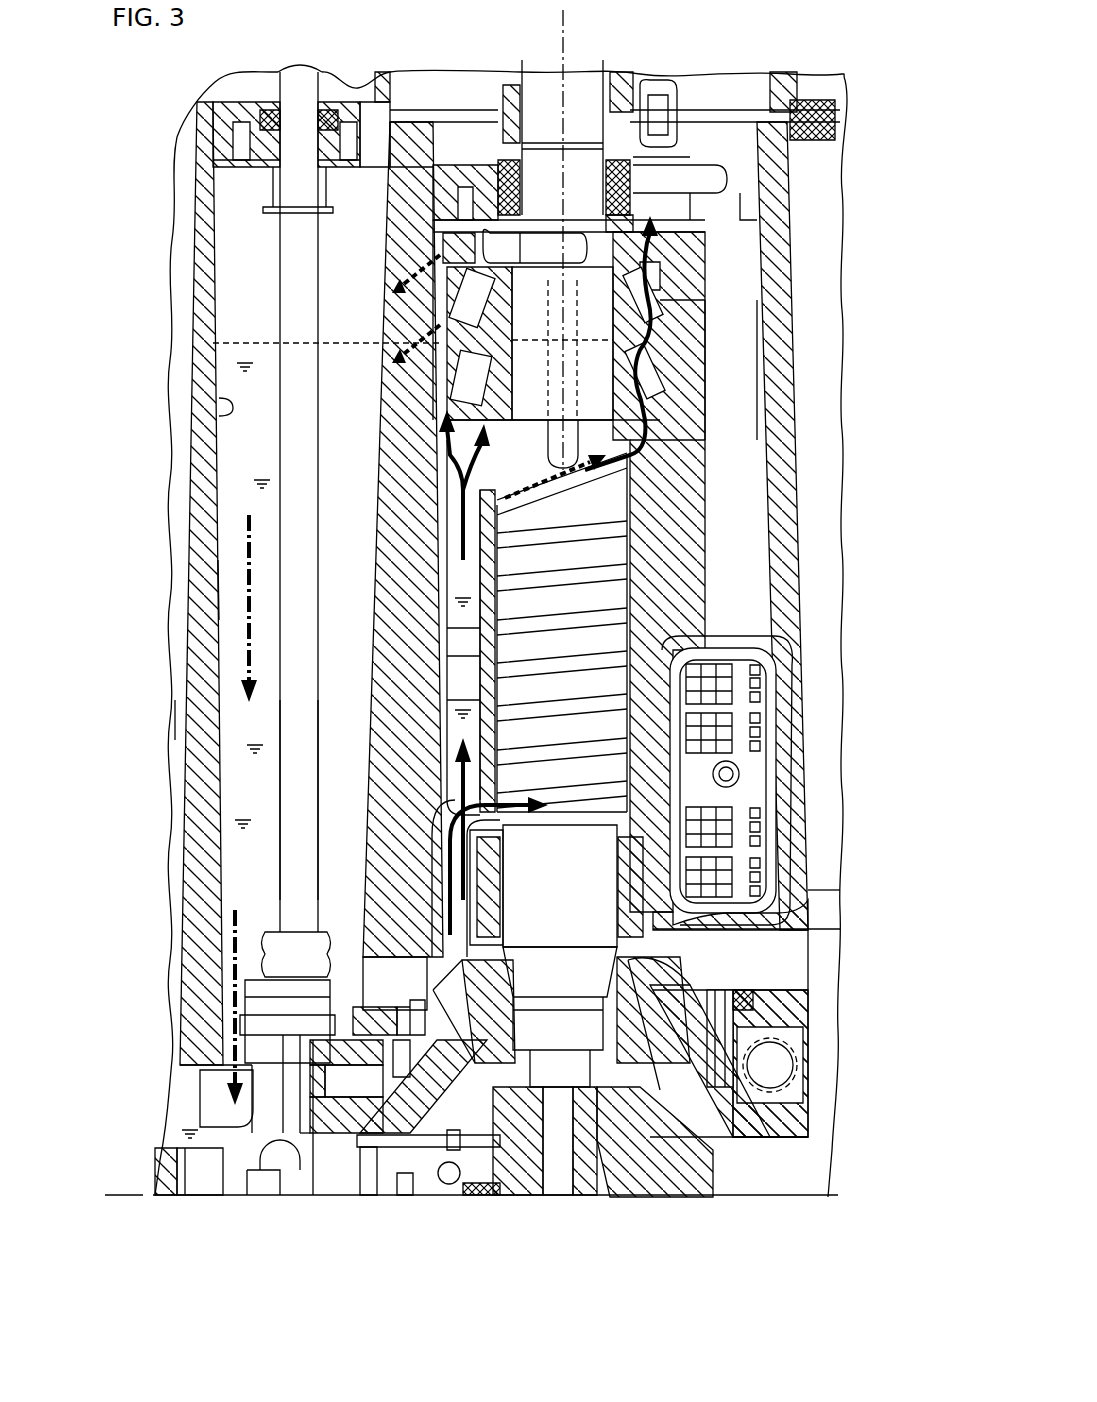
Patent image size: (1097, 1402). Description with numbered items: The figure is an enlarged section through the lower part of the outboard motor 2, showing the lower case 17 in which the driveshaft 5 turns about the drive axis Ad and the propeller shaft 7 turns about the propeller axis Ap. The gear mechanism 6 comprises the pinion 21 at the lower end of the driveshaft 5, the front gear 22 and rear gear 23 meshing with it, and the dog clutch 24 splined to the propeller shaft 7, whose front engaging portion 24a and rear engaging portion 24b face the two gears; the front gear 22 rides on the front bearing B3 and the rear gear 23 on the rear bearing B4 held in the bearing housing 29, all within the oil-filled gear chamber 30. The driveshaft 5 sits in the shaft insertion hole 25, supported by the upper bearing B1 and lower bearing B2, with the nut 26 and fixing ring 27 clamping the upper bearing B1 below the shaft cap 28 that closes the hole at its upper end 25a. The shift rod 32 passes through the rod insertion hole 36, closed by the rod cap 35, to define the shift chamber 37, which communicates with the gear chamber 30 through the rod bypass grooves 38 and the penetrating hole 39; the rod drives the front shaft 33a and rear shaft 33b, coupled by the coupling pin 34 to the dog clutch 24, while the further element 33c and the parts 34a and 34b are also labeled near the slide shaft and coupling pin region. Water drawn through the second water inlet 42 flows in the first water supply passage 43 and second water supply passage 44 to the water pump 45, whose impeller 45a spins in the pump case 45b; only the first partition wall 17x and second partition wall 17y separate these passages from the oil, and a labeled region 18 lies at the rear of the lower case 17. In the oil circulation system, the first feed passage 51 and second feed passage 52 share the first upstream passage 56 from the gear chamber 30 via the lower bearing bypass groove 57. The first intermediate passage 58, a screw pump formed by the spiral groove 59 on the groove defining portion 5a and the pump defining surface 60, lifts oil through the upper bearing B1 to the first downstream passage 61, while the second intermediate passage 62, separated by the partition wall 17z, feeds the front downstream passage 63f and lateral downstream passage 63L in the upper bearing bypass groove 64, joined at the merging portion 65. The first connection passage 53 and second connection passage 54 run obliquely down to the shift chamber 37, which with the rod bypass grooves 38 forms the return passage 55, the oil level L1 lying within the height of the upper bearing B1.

The outboard motor 2 is at (181, 132).
The driveshaft 5 is at (586, 80).
The groove defining portion 5a is at (700, 476).
The gear mechanism 6 is at (346, 1205).
The propeller shaft 7 is at (670, 1197).
The lower case 17 is at (200, 224).
The first partition wall 17x is at (196, 580).
The second partition wall 17y is at (732, 581).
The partition wall 17z is at (410, 584).
The motor housing 18 is at (822, 756).
The pinion 21 is at (612, 980).
The front gear 22 is at (382, 1172).
The rear gear 23 is at (735, 1115).
The dog clutch 24 is at (514, 1192).
The front engaging portion 24a is at (470, 1175).
The rear engaging portion 24b is at (622, 1165).
The shaft insertion hole 25 is at (710, 528).
The upper end of shaft insertion hole 25a is at (705, 200).
The nut 26 is at (665, 276).
The fixing ring 27 is at (680, 249).
The shaft cap 28 is at (690, 182).
The bearing housing 29 is at (802, 1002).
The gear chamber 30 is at (238, 1178).
The shift rod 32 is at (304, 88).
The front shaft 33a is at (292, 868).
The rear shaft 33b is at (265, 998).
The pipe outlet 33c is at (262, 1112).
The coupling pin 34 is at (558, 1190).
The left base 34a is at (182, 1180).
The center base 34b is at (408, 1192).
The rod cap 35 is at (380, 100).
The rod insertion hole 36 is at (216, 406).
The shift chamber 37 is at (233, 460).
The rod bypass grooves 38 is at (250, 1026).
The penetrating hole 39 is at (366, 940).
The second water inlet 42 is at (772, 714).
The first water supply passage 43 is at (176, 718).
The second water supply passage 44 is at (722, 618).
The water pump 45 is at (442, 72).
The impeller 45a is at (640, 82).
The pump case 45b is at (784, 82).
The first feed passage 51 is at (585, 800).
The second feed passage 52 is at (445, 776).
The first connection passage 53 is at (406, 262).
The second connection passage 54 is at (410, 335).
The return passage 55 is at (242, 499).
The first upstream passage 56 is at (470, 858).
The lower bearing bypass groove 57 is at (455, 892).
The first intermediate passage 58 is at (455, 630).
The spiral groove 59 is at (470, 655).
The pump defining surface 60 is at (455, 700).
The first downstream passage 61 is at (665, 222).
The second intermediate passage 62 is at (458, 760).
The front downstream passage 63f is at (450, 395).
The lateral downstream passage 63L is at (500, 440).
The upper bearing bypass groove 64 is at (470, 458).
The merging portion 65 is at (440, 545).
The drive axis Ad is at (560, 52).
The propeller axis Ap is at (133, 1193).
The upper bearing B1 is at (668, 376).
The lower bearing B2 is at (702, 946).
The front bearing B3 is at (330, 1165).
The rear bearing B4 is at (782, 1066).
The oil level L1 is at (246, 340).